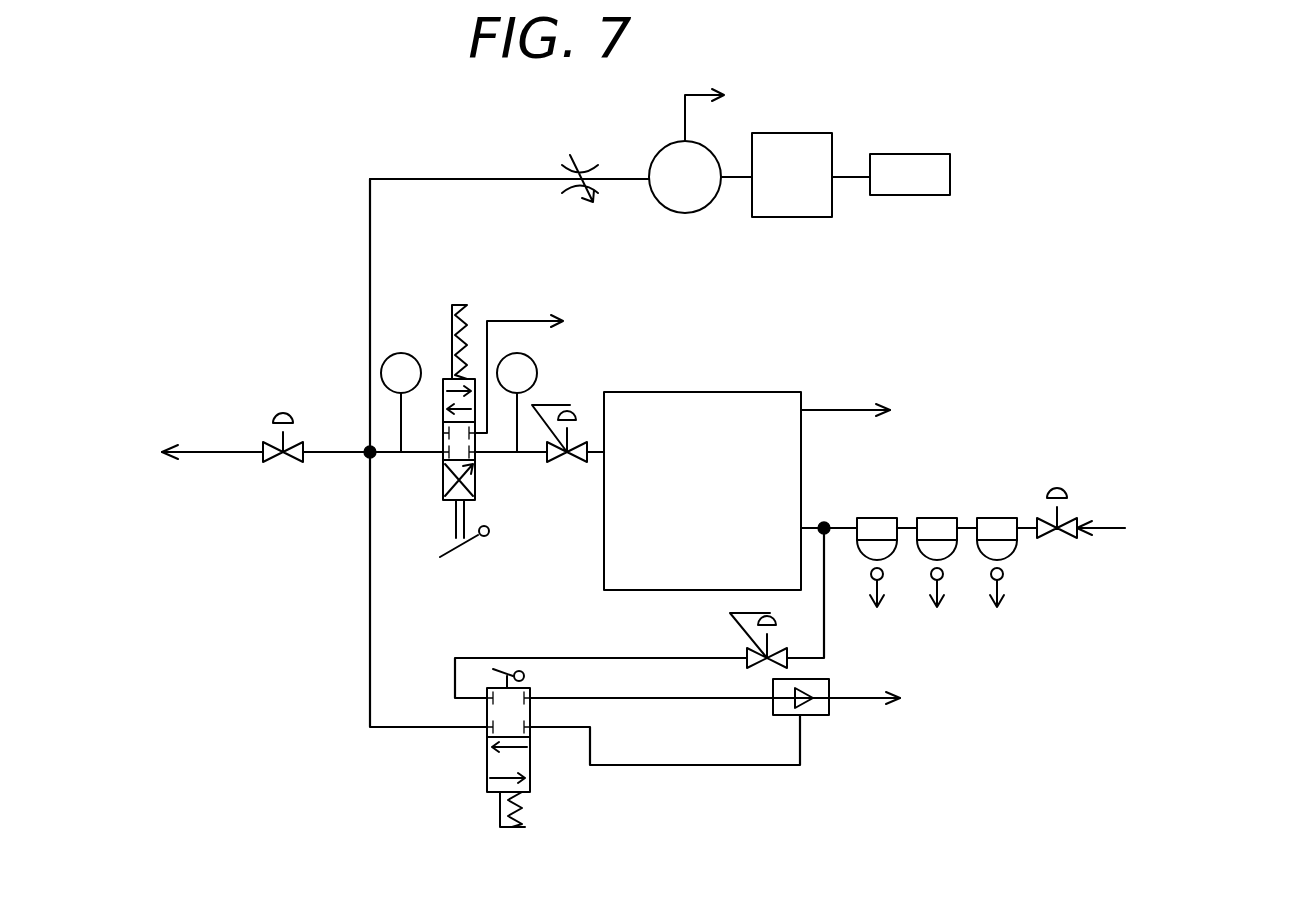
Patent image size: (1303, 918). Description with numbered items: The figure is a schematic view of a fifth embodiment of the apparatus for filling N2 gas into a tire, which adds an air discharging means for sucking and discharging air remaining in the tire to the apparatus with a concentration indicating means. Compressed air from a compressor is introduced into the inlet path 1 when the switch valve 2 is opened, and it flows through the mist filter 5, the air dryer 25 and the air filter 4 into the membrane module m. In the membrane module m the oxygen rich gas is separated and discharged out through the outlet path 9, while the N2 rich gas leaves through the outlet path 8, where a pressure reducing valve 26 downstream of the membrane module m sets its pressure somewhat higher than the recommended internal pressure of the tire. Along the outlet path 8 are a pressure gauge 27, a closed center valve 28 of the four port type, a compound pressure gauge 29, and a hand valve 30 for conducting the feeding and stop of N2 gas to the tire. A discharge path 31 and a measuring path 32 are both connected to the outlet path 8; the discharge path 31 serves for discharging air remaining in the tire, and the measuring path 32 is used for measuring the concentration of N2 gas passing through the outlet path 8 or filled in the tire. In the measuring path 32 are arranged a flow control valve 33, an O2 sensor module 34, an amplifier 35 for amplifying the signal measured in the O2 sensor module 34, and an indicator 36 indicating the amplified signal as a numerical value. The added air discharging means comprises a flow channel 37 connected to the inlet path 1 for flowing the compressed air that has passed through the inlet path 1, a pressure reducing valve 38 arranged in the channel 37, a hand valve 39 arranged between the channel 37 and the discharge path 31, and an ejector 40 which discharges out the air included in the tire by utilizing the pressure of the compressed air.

The inlet path 1 is at (848, 514).
The switch valve 2 is at (1067, 538).
The air filter 4 is at (1000, 517).
The mist filter 5 is at (880, 517).
The outlet path 8 is at (218, 450).
The outlet path 9 is at (842, 408).
The air dryer 25 is at (940, 517).
The pressure reducing valve 26 is at (570, 462).
The pressure gauge 27 is at (538, 365).
The closed center valve 28 is at (477, 481).
The compound pressure gauge 29 is at (401, 353).
The hand valve 30 is at (266, 440).
The discharge path 31 is at (368, 512).
The measuring path 32 is at (455, 178).
The flow control valve 33 is at (572, 192).
The O2 sensor module 34 is at (705, 210).
The amplifier 35 is at (845, 217).
The indicator 36 is at (955, 195).
The flow channel 37 is at (578, 658).
The pressure reducing valve 38 is at (745, 648).
The hand valve 39 is at (486, 770).
The ejector 40 is at (826, 716).
The membrane module m is at (732, 388).